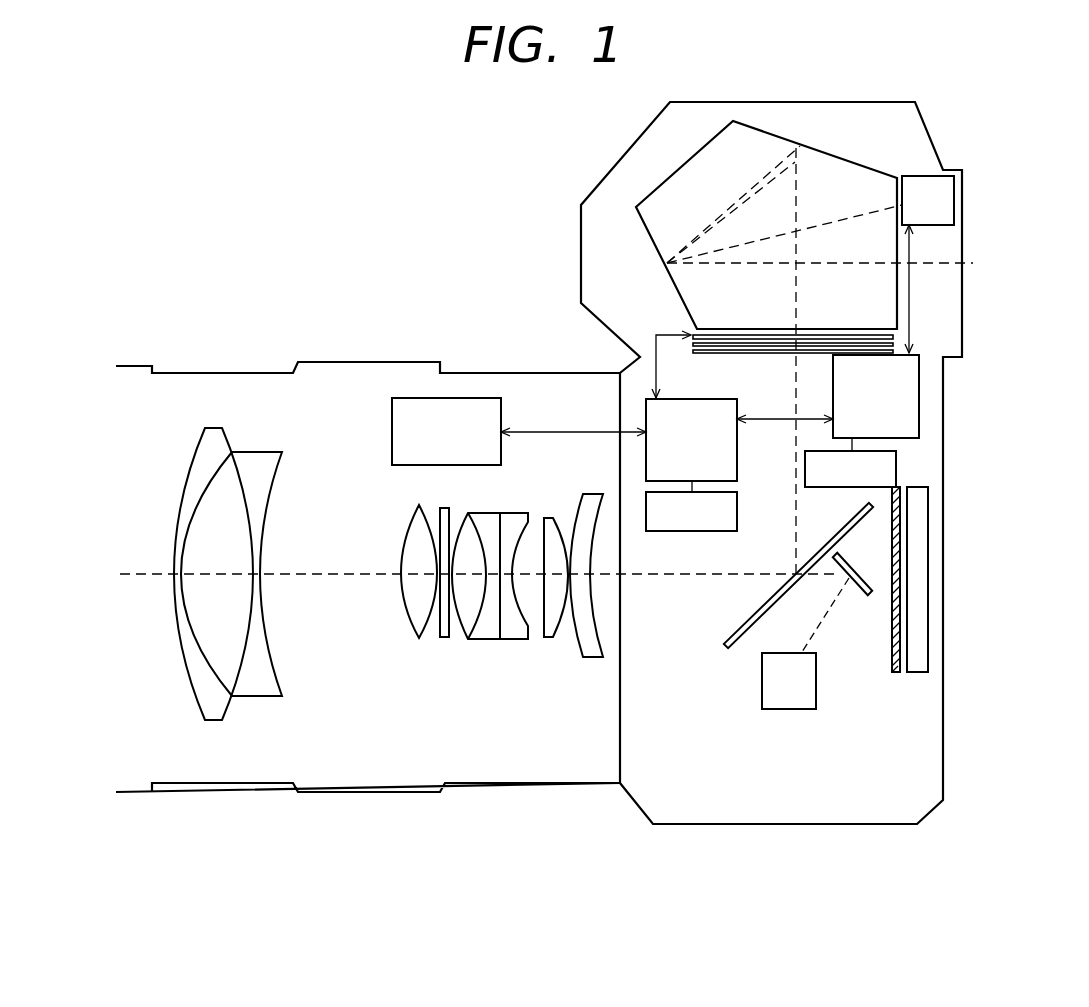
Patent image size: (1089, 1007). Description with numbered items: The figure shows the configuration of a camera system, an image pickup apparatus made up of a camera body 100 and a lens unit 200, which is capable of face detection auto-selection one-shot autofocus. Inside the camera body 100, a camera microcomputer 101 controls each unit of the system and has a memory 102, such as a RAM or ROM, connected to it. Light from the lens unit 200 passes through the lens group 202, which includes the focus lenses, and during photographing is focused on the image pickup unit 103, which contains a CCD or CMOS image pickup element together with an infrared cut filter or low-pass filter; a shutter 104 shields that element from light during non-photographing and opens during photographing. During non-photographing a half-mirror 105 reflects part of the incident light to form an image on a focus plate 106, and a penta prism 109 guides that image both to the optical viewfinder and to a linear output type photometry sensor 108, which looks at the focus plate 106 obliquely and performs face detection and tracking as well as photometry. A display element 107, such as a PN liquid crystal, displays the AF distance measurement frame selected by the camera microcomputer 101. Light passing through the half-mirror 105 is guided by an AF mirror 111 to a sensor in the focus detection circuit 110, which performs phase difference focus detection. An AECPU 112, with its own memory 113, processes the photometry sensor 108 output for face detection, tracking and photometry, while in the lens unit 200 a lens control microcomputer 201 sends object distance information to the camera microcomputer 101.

The camera body 100 is at (875, 788).
The camera microcomputer 101 is at (700, 398).
The memory 102 is at (690, 531).
The image pickup unit 103 is at (918, 636).
The shutter 104 is at (905, 515).
The half-mirror 105 is at (737, 652).
The focus plate 106 is at (872, 350).
The display element 107 is at (846, 336).
The photometry sensor 108 is at (955, 196).
The penta prism 109 is at (680, 190).
The focus detection circuit 110 is at (817, 690).
The AF mirror 111 is at (868, 578).
The AECPU 112 is at (922, 394).
The memory 113 is at (898, 468).
The lens unit 200 is at (158, 437).
The lens control microcomputer 201 is at (427, 398).
The lens group 202 is at (400, 680).